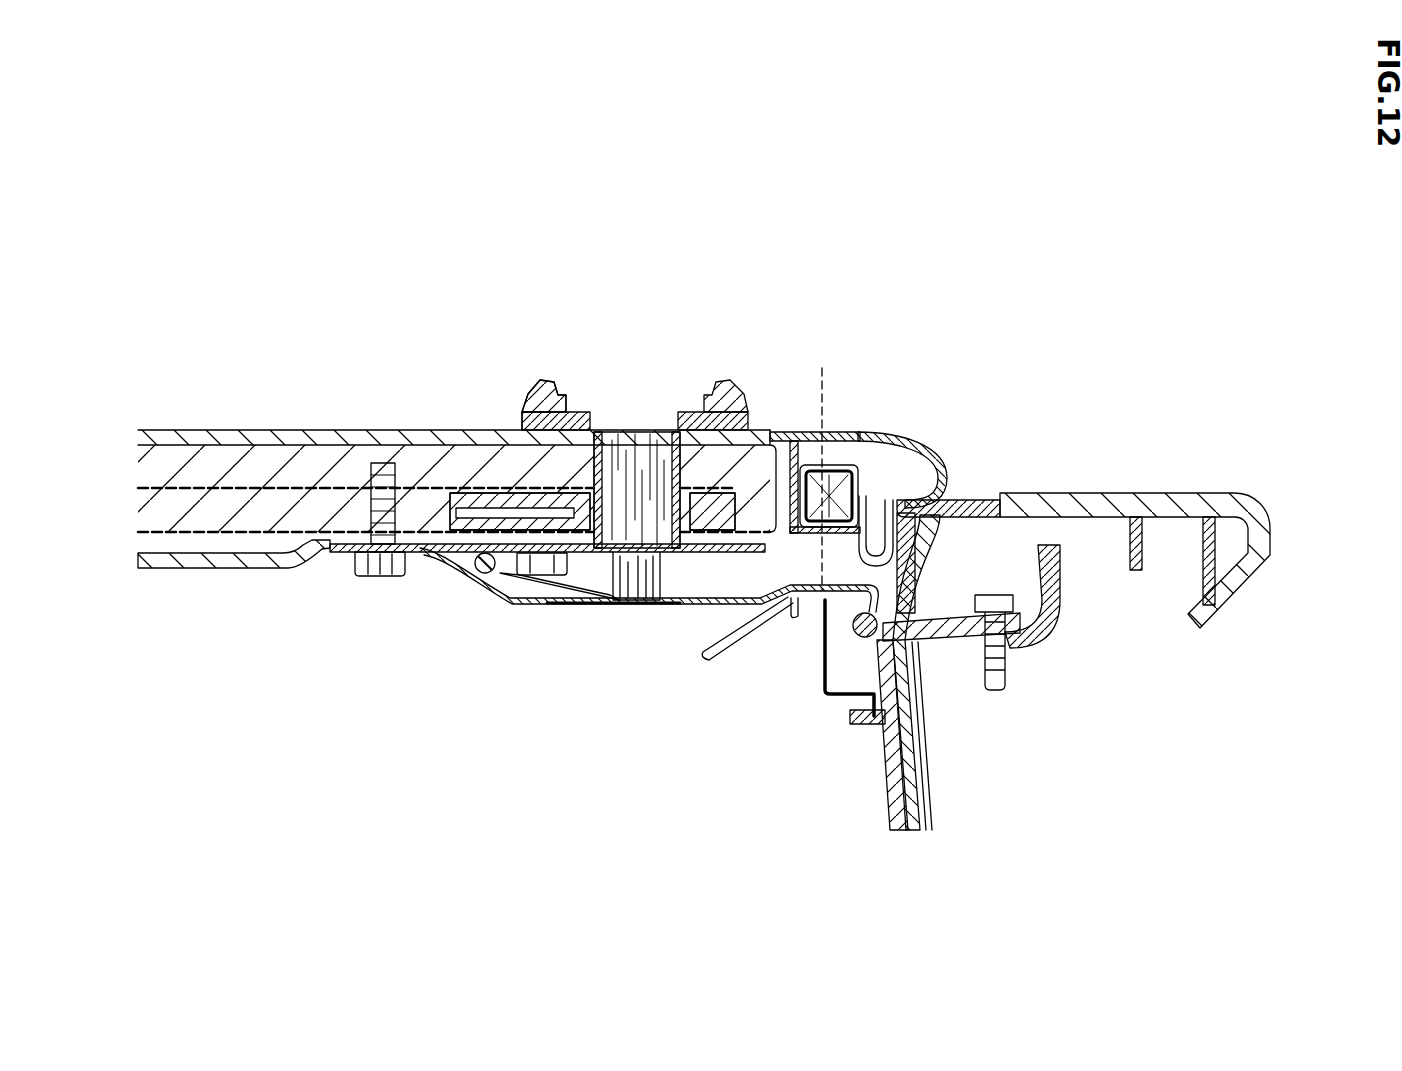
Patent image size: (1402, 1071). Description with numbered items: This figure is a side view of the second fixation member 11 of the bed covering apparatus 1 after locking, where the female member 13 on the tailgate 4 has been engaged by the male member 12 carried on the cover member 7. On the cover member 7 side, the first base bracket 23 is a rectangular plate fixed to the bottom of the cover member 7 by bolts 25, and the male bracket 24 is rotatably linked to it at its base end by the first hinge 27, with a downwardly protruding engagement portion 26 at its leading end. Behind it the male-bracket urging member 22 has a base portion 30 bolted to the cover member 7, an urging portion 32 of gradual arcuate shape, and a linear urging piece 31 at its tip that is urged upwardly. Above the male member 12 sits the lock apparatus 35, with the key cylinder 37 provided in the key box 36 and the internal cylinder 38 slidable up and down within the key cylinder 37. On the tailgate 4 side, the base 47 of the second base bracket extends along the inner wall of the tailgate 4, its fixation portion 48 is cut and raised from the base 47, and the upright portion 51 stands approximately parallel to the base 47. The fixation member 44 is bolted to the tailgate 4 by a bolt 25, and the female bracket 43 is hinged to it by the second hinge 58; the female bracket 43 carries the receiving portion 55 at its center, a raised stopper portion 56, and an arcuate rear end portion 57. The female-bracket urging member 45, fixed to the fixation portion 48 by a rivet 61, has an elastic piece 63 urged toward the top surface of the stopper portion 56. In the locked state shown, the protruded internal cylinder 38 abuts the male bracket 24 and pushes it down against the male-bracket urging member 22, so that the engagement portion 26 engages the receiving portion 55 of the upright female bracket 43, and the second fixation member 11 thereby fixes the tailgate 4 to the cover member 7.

The bed covering apparatus 1 is at (457, 441).
The tailgate 4 is at (1075, 492).
The cover member 7 is at (393, 432).
The second fixation member 11 is at (722, 893).
The male member 12 is at (598, 725).
The female member 13 is at (768, 785).
The male-bracket urging member 22 is at (505, 608).
The first base bracket 23 is at (660, 628).
The male bracket 24 is at (555, 604).
The bolt 25 is at (376, 578).
The engagement portion 26 is at (788, 610).
The first hinge 27 is at (477, 571).
The base portion 30 is at (336, 556).
The urging piece 31 is at (592, 606).
The urging portion 32 is at (475, 598).
The lock apparatus 35 is at (654, 463).
The key box 36 is at (738, 408).
The key cylinder 37 is at (660, 628).
The internal cylinder 38 is at (620, 600).
The female bracket 43 is at (706, 656).
The fixation member 44 is at (940, 630).
The female-bracket urging member 45 is at (820, 694).
The base 47 is at (880, 760).
The fixation portion 48 is at (905, 752).
The upright portion 51 is at (902, 500).
The receiving portion 55 is at (822, 463).
The stopper portion 56 is at (826, 632).
The rear end portion 57 is at (868, 498).
The second hinge 58 is at (912, 642).
The rivet 61 is at (912, 690).
The elastic piece 63 is at (826, 656).